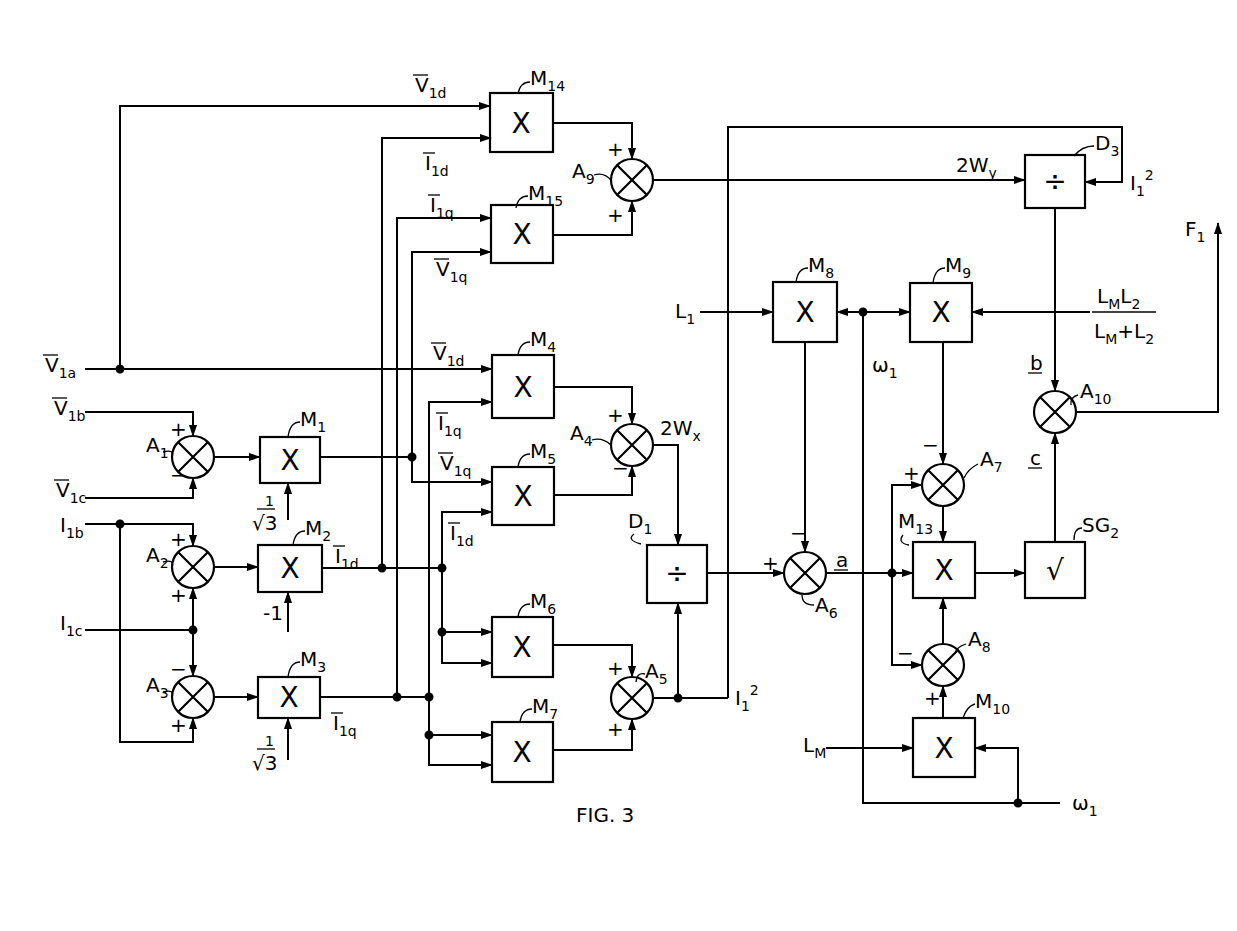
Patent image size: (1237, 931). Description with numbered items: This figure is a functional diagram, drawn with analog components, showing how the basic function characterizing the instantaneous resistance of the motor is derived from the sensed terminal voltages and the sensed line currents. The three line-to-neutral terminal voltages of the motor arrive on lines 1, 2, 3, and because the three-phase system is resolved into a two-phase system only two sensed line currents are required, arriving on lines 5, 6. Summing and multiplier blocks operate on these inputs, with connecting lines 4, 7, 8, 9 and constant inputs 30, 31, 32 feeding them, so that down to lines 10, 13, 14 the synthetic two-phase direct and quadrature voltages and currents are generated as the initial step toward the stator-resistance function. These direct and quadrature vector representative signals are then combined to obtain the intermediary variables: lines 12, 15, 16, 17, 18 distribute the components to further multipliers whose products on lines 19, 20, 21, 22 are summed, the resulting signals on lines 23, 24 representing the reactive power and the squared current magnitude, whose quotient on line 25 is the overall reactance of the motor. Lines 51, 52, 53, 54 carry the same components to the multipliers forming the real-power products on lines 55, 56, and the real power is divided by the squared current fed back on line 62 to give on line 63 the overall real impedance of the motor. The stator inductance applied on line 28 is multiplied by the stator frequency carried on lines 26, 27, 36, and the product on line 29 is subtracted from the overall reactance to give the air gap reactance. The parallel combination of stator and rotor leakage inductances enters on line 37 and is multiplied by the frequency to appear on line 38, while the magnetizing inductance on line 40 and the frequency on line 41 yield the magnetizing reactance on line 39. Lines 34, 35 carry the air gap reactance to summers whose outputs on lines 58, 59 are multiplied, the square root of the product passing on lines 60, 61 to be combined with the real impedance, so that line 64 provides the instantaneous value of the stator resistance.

The line 1 is at (98, 368).
The line 2 is at (124, 407).
The line 3 is at (140, 496).
The summer A1 output line 4 is at (230, 440).
The line 5 is at (148, 524).
The line 6 is at (144, 630).
The phase current line to summer A3 7 is at (153, 742).
The summer A2 output line 8 is at (232, 550).
The summer A3 output line 9 is at (228, 680).
The line 10 is at (414, 485).
The q-axis current output line 12 is at (366, 696).
The line 13 is at (429, 540).
The line 14 is at (444, 570).
The d-axis current line to multiplier M6 15 is at (460, 630).
The d-axis current line to multiplier M6 16 is at (460, 663).
The q-axis current line to multiplier M7 17 is at (445, 734).
The q-axis current line to multiplier M7 18 is at (468, 765).
The multiplier M4 output line 19 is at (576, 386).
The multiplier M5 output line 20 is at (600, 498).
The multiplier M6 output line 21 is at (582, 644).
The multiplier M7 output line 22 is at (586, 748).
The summer A4 output line 23 is at (688, 468).
The summer A5 output line 24 is at (686, 646).
The divider D1 output line 25 is at (734, 572).
The frequency signal line 26 is at (863, 380).
The frequency signal line to multiplier M8 27 is at (850, 306).
The inductance L1 input line 28 is at (716, 310).
The multiplier M8 output line 29 is at (803, 374).
The constant input to multiplier M1 30 is at (292, 503).
The constant input to multiplier M2 31 is at (292, 615).
The constant input to multiplier M3 32 is at (292, 743).
The line to summer A7 34 is at (884, 492).
The line to summer A8 35 is at (894, 676).
The frequency line to multiplier M9 36 is at (898, 299).
The inductance ratio input line 37 is at (1033, 308).
The multiplier M9 output line 38 is at (945, 420).
The multiplier M10 output line 39 is at (940, 710).
The magnetizing inductance input line 40 is at (848, 747).
The frequency input line to multiplier M10 41 is at (998, 745).
The d-axis voltage line to multiplier M14 51 is at (126, 120).
The d-axis current line to multiplier M14 52 is at (382, 222).
The q-axis current line to multiplier M15 53 is at (397, 220).
The q-axis voltage line to multiplier M15 54 is at (444, 253).
The multiplier M14 output line 55 is at (590, 123).
The multiplier M15 output line 56 is at (584, 238).
The summer A7 output line 58 is at (950, 515).
The summer A8 output line 59 is at (938, 626).
The multiplier M13 output line 60 is at (990, 570).
The square root SG2 output line 61 is at (1058, 472).
The current squared feedback line 62 is at (1017, 127).
The divider D3 output line 63 is at (1056, 358).
The line 64 is at (1218, 310).